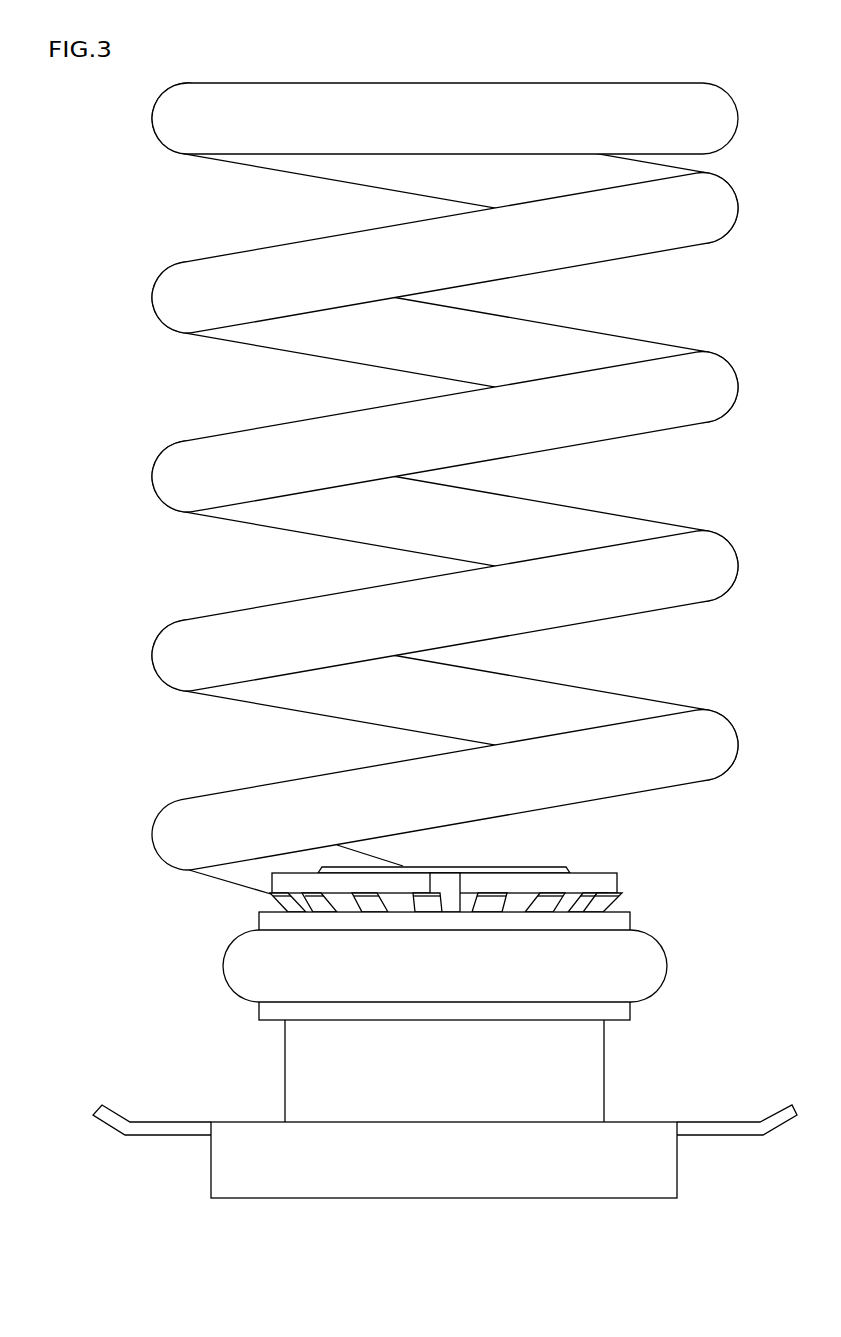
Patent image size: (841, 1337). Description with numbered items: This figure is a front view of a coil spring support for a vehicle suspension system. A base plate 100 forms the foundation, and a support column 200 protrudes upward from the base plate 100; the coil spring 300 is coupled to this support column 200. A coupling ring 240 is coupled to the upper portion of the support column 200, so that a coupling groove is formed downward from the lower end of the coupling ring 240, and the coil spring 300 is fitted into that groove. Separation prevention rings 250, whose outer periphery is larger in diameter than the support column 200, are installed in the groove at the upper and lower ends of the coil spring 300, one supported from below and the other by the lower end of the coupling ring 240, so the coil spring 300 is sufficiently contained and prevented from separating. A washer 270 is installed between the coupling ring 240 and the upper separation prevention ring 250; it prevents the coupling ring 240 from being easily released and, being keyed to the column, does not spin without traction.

The base plate 100 is at (248, 1137).
The support column 200 is at (600, 1080).
The coupling ring 240 is at (604, 873).
The separation prevention ring 250 is at (625, 922).
The washer 270 is at (623, 895).
The coil spring 300 is at (658, 962).